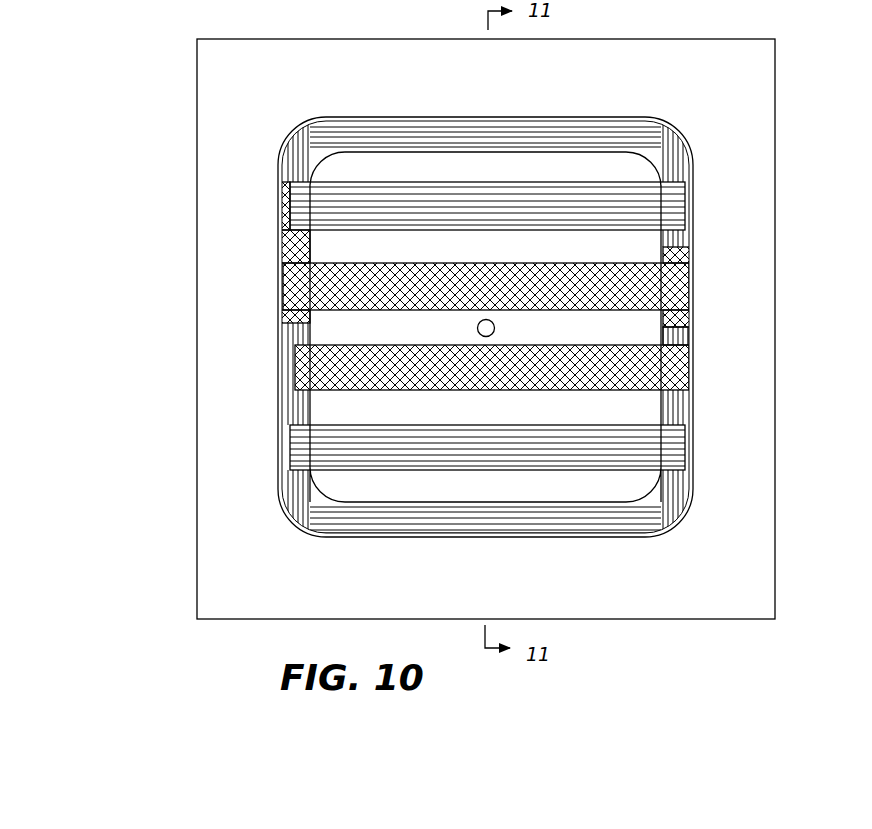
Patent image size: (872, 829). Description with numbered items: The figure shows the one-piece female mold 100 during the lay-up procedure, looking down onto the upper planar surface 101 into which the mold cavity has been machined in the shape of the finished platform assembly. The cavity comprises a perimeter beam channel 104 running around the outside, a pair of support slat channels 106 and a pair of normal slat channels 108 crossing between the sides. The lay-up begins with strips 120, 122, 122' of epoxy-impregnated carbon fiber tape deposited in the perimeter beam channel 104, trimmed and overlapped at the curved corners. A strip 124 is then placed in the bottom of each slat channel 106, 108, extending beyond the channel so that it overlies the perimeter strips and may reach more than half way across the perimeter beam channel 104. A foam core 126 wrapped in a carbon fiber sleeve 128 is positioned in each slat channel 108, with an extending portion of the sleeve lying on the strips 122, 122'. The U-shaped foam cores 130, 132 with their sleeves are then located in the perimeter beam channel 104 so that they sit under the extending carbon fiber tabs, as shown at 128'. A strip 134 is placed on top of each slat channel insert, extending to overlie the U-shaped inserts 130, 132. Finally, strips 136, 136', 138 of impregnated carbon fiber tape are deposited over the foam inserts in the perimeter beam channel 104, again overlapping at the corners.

The female mold 100 is at (792, 334).
The upper planar surface 101 is at (765, 387).
The perimeter beam channel 104 is at (650, 520).
The support slat channel 106 is at (650, 230).
The normal slat channel 108 is at (655, 270).
The strip of carbon fiber tape 120 is at (307, 527).
The strip of carbon fiber tape 122 is at (232, 499).
The strip of carbon fiber tape 122' is at (758, 498).
The strip of carbon fiber tape 124 is at (302, 447).
The foam core 126 is at (320, 357).
The carbon fiber sleeve 128 is at (422, 369).
The carbon fiber tab 128' is at (419, 282).
The U-shaped foam core 130 is at (290, 247).
The U-shaped foam core 132 is at (690, 318).
The strip of carbon fiber tape 134 is at (297, 207).
The strip of carbon fiber tape 136 is at (232, 138).
The strip of carbon fiber tape 136' is at (753, 174).
The strip of carbon fiber tape 138 is at (362, 132).